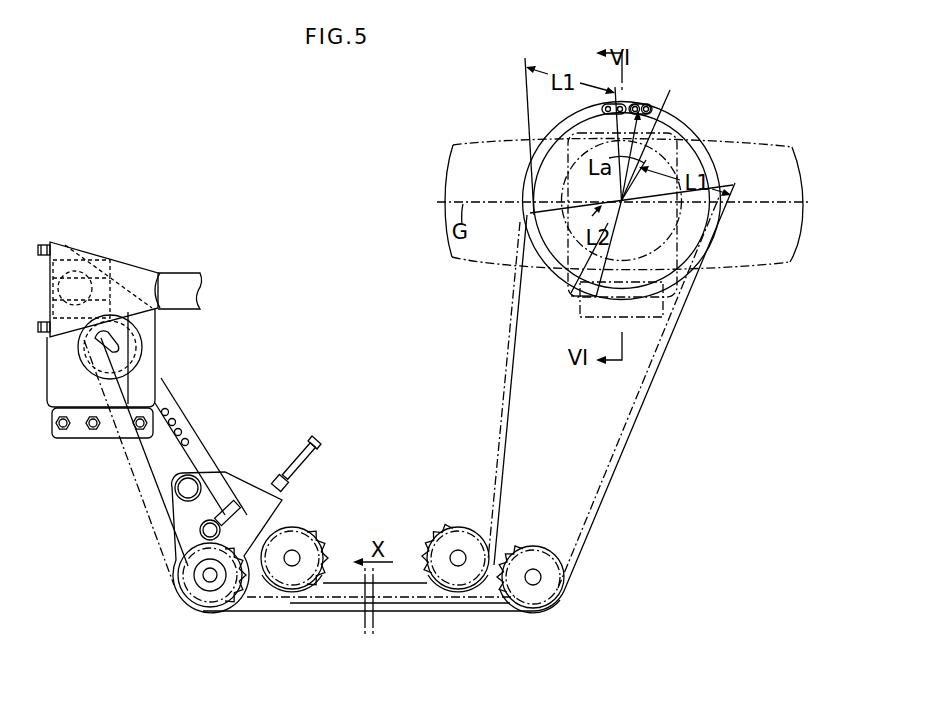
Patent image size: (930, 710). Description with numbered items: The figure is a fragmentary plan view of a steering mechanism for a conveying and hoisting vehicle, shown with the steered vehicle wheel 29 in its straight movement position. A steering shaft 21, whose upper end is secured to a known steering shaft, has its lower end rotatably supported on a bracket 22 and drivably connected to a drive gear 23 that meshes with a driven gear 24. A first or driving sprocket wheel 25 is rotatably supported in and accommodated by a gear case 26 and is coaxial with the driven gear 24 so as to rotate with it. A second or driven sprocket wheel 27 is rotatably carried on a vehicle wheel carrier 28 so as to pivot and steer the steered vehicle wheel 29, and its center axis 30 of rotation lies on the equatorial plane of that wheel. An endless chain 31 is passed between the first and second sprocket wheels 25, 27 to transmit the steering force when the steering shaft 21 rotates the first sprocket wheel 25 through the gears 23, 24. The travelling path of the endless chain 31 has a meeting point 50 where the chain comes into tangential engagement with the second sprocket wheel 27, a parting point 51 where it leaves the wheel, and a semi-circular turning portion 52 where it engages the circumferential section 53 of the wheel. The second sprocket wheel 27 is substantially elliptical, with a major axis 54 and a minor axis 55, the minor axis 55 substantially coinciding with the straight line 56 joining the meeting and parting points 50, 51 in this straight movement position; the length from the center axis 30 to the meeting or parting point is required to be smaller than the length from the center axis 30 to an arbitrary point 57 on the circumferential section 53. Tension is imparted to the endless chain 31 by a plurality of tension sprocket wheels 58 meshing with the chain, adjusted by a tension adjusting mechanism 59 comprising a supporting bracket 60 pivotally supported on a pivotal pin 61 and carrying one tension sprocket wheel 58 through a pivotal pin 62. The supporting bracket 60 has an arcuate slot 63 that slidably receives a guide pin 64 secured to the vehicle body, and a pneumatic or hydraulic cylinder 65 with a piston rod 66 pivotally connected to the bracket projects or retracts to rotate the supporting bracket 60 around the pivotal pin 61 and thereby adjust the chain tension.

The steering shaft 21 is at (186, 282).
The bracket 22 is at (137, 265).
The drive gear 23 is at (93, 252).
The driven gear 24 is at (97, 372).
The first sprocket wheel 25 is at (128, 350).
The gear case 26 is at (82, 425).
The second sprocket wheel 27 is at (565, 300).
The vehicle wheel carrier 28 is at (682, 310).
The steered vehicle wheel 29 is at (768, 272).
The center axis 30 is at (623, 205).
The endless chain 31 is at (617, 468).
The meeting point 50 is at (710, 234).
The parting point 51 is at (538, 182).
The semi-circular turning portion 52 is at (688, 135).
The circumferential section 53 is at (703, 147).
The major axis 54 is at (659, 112).
The minor axis 55 is at (540, 228).
The straight line 56 is at (559, 272).
The arbitrary point 57 is at (638, 104).
The tension sprocket wheels 58 is at (308, 532).
The tension adjusting mechanism 59 is at (236, 471).
The supporting bracket 60 is at (184, 513).
The pivotal pin 61 is at (177, 483).
The pivotal pin 62 is at (206, 580).
The arcuate slot 63 is at (224, 520).
The guide pin 64 is at (198, 541).
The cylinder 65 is at (320, 446).
The piston rod 66 is at (271, 477).